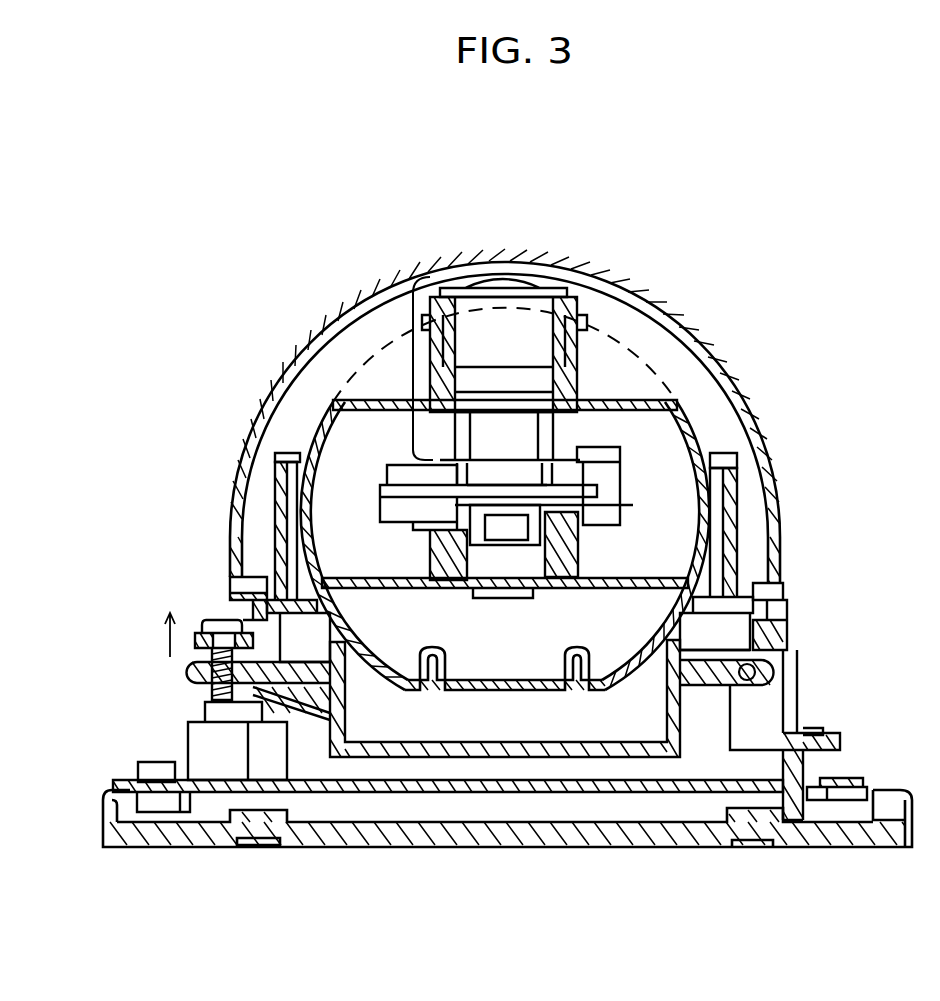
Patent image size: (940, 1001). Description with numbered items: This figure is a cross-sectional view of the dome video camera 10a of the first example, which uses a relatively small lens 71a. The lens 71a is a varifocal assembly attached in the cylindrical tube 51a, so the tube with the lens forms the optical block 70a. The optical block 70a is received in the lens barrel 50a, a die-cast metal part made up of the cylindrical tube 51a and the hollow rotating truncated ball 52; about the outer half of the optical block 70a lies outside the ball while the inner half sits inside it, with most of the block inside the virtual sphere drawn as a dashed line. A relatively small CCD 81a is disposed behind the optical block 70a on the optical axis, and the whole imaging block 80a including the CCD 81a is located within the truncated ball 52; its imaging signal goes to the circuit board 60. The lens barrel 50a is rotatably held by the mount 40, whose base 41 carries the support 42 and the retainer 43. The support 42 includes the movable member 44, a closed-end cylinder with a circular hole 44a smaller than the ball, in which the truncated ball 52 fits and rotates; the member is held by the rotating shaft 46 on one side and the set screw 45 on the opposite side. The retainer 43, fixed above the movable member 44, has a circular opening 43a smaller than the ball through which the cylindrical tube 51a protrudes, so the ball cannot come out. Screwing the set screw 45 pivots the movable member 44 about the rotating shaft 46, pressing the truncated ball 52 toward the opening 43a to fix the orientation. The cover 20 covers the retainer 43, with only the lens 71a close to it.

The dome video camera 10a is at (493, 189).
The cover 20 is at (603, 268).
The lens 71a is at (468, 262).
The optical block 70a is at (405, 362).
The lens barrel 50a is at (605, 333).
The cylindrical tube 51a is at (545, 432).
The circular opening 43a is at (707, 447).
The retainer 43 is at (728, 478).
The truncated ball 52 is at (703, 528).
The CCD 81a is at (577, 533).
The imaging block 80a is at (378, 540).
The set screw 45 is at (218, 622).
The movable member 44 is at (197, 675).
The circular hole 44a is at (440, 713).
The rotating shaft 46 is at (757, 672).
The support 42 is at (765, 698).
The circuit board 60 is at (672, 783).
The mount 40 is at (208, 837).
The base 41 is at (507, 818).